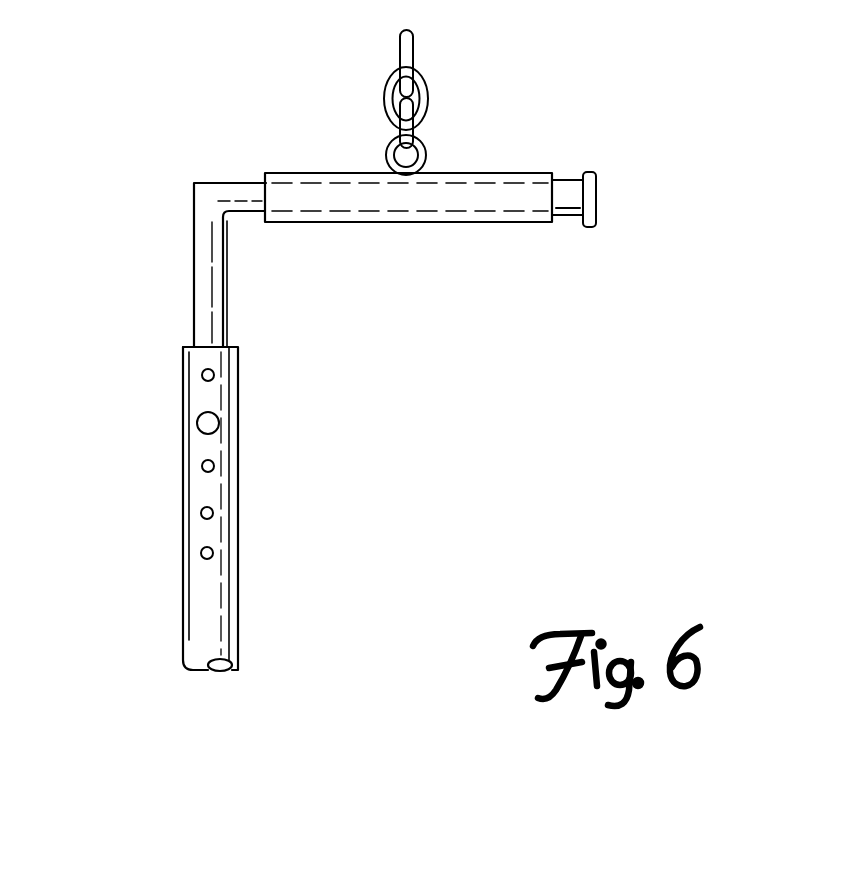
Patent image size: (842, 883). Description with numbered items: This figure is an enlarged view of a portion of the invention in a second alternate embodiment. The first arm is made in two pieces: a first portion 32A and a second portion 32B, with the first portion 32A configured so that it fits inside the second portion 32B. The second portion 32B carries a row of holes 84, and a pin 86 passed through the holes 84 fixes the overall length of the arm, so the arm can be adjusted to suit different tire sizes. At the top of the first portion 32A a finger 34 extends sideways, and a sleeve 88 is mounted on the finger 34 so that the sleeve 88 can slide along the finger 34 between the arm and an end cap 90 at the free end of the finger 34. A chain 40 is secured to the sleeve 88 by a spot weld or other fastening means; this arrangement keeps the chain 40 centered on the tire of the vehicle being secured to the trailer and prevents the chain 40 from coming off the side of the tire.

The chain 40 is at (413, 52).
The finger 34 is at (233, 180).
The first portion 32A is at (196, 263).
The second portion 32B is at (182, 457).
The holes 84 is at (213, 514).
The pin 86 is at (213, 425).
The sleeve 88 is at (385, 223).
The end cap 90 is at (600, 198).